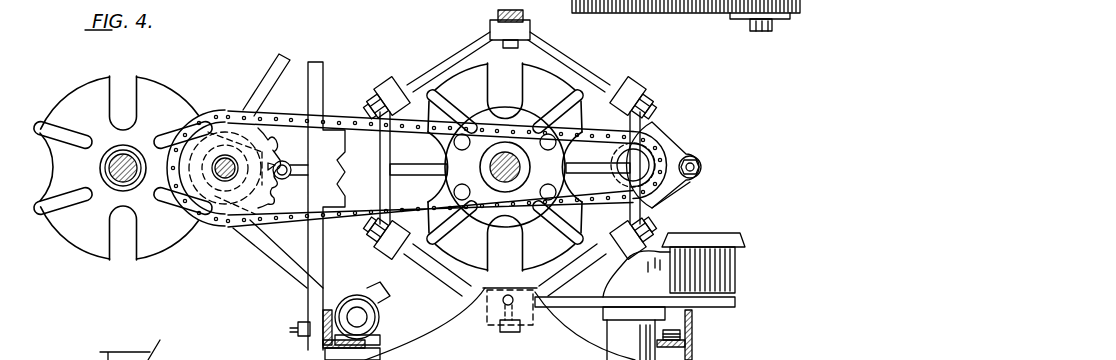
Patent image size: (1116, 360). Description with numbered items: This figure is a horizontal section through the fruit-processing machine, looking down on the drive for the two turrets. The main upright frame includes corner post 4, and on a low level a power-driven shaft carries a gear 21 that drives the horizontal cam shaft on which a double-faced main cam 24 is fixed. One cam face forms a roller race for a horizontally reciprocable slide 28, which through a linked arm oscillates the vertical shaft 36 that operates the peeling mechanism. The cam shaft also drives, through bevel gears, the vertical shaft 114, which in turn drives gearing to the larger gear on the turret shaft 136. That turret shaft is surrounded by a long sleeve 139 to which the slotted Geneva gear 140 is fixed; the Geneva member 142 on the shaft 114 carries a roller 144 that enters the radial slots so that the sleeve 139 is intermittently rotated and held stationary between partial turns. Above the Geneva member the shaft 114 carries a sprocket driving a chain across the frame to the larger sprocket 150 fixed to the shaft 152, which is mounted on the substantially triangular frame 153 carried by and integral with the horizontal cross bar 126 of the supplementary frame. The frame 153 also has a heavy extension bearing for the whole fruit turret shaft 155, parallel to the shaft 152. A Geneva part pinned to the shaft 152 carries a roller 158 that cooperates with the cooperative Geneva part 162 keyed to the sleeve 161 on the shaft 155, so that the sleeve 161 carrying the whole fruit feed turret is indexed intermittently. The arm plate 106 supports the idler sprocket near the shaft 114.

The corner post 4 is at (694, 329).
The gear 21 is at (775, 16).
The main cam 24 is at (720, 272).
The horizontally reciprocable slide 28 is at (720, 241).
The vertical shaft 36 is at (370, 314).
The sprocket arm plate 106 is at (645, 162).
The vertical shaft 114 is at (625, 119).
The horizontal cross bar 126 is at (378, 55).
The turret shaft 136 is at (452, 88).
The long sleeve 139 is at (565, 105).
The Geneva gear 140 is at (678, 73).
The Geneva member 142 is at (676, 186).
The roller 144 is at (773, 176).
The larger sprocket 150 is at (221, 212).
The shaft 152 is at (223, 162).
The triangular frame 153 is at (300, 43).
The whole fruit turret shaft 155 is at (127, 157).
The roller 158 is at (340, 160).
The sleeve 161 is at (113, 160).
The cooperative part of the Geneva 162 is at (97, 223).